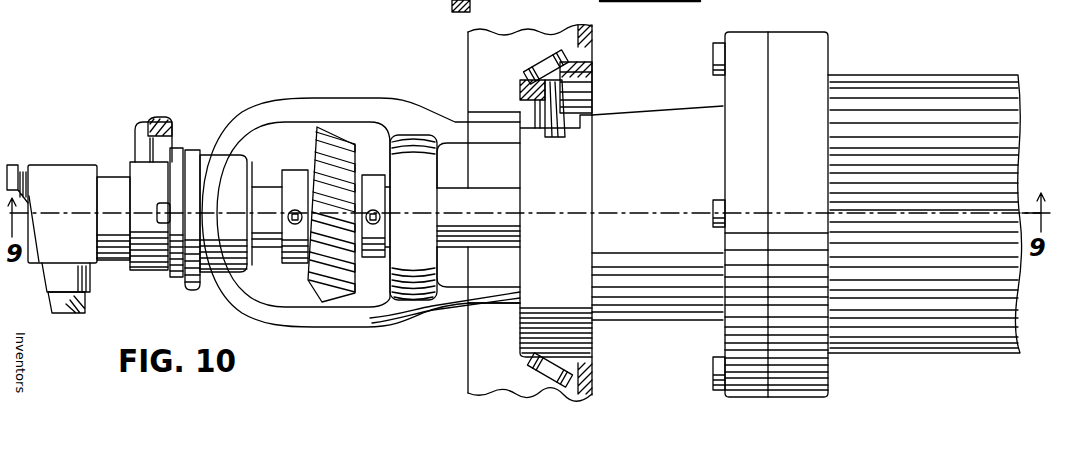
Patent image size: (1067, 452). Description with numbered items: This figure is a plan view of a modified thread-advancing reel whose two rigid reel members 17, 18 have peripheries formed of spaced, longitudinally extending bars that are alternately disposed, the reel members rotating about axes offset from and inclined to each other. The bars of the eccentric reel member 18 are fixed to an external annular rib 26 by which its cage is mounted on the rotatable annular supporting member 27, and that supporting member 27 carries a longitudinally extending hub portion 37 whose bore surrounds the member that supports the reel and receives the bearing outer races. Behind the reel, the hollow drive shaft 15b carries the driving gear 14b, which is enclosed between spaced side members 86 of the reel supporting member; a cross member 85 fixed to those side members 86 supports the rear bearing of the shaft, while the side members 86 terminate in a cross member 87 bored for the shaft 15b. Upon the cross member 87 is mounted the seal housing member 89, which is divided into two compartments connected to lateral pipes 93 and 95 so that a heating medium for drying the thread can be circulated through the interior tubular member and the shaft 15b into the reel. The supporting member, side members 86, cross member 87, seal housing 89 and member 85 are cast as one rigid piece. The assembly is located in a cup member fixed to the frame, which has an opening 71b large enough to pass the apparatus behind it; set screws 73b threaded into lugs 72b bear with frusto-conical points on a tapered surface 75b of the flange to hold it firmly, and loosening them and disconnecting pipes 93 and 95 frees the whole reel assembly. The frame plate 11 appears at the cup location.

The member 89 is at (73, 172).
The lateral pipe 93 is at (88, 300).
The lateral pipe 95 is at (138, 148).
The cross member 87 is at (190, 175).
The side members 86 is at (338, 105).
The driving gear 14b is at (306, 273).
The cross member 85 is at (406, 199).
The drive shaft 15b is at (478, 217).
The opening 71b is at (530, 107).
The lugs 72b is at (553, 52).
The set screws 73b is at (541, 64).
The tapered surface 75b is at (594, 86).
The frame plate 11 is at (594, 388).
The hub portion 37 is at (673, 176).
The annular supporting member 27 is at (747, 158).
The external annular rib 26 is at (793, 128).
The reel member 17 is at (870, 103).
The reel member 18 is at (942, 88).